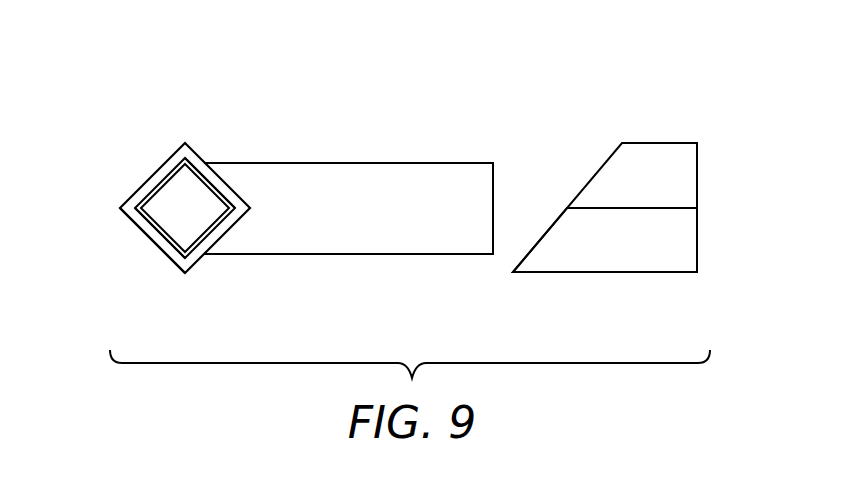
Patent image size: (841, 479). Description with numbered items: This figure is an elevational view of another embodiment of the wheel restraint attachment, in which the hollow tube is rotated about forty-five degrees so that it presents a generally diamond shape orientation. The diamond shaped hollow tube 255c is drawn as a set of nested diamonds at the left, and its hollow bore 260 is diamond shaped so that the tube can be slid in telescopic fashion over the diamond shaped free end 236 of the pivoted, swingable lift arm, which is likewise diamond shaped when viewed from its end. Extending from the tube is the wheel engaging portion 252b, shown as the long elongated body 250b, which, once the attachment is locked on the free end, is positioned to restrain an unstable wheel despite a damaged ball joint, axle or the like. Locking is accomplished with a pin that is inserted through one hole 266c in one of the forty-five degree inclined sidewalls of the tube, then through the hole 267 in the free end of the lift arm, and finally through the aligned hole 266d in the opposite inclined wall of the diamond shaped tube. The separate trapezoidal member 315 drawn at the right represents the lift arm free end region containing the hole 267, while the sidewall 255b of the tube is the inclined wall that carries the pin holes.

The diamond-shaped free end 236 is at (170, 190).
The second edge 255b is at (200, 190).
The hole 266c is at (203, 168).
The hollow bore 260 is at (170, 183).
The aligned hole 266d is at (163, 222).
The diamond shaped hollow tube 255c is at (157, 248).
The strap 250b is at (407, 148).
The wheel engaging portion 252b is at (350, 256).
The end portion 315 is at (659, 142).
The hole 267 is at (610, 252).